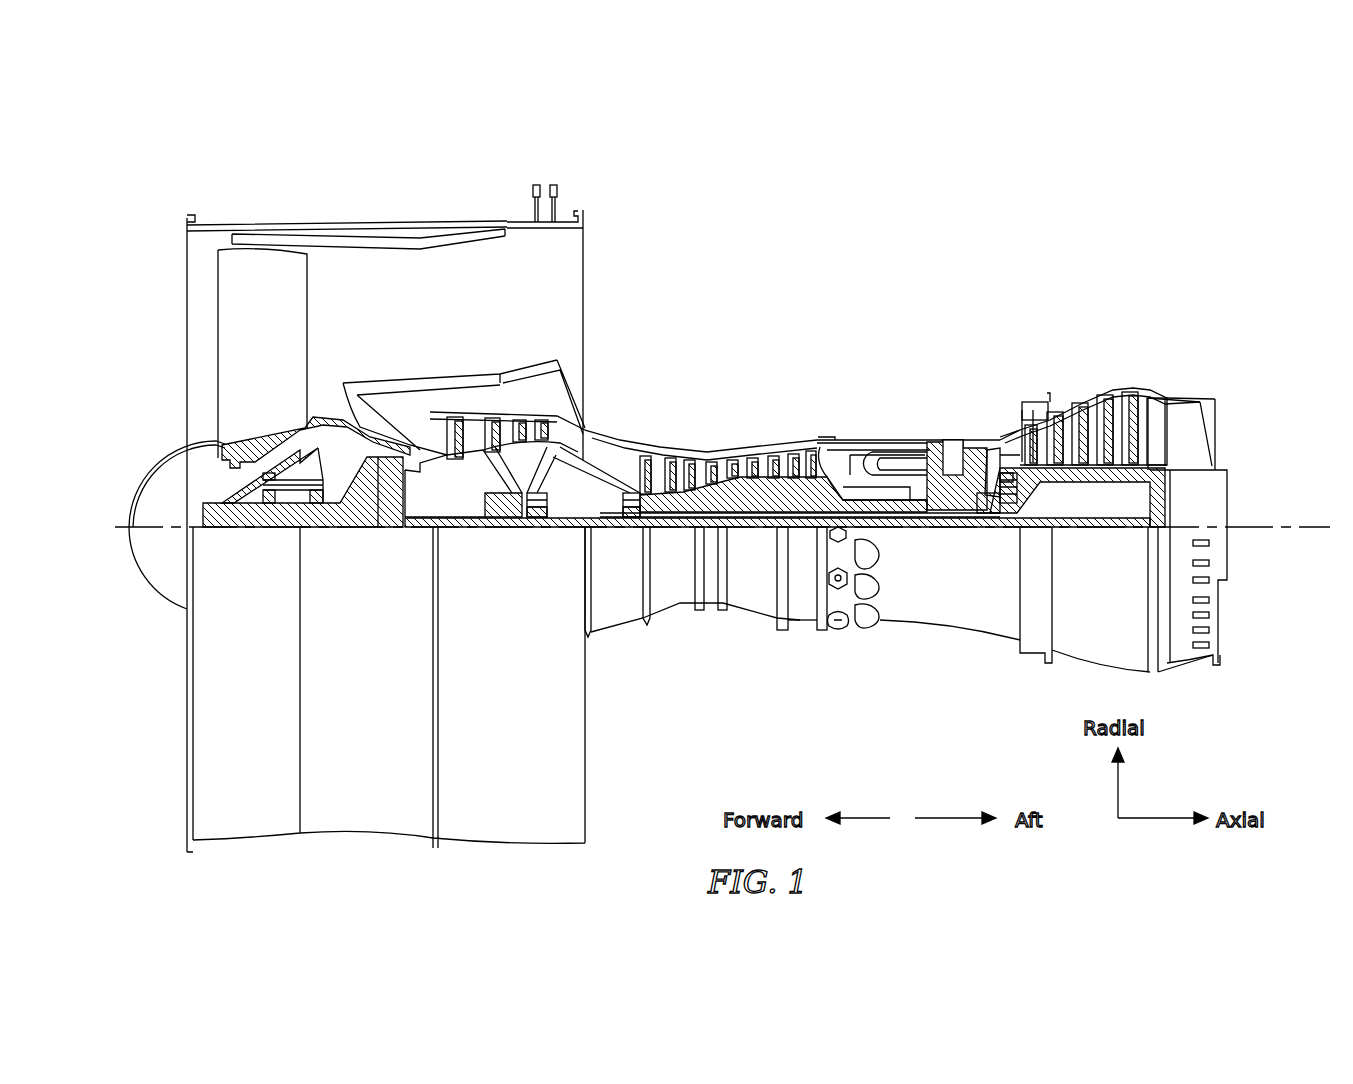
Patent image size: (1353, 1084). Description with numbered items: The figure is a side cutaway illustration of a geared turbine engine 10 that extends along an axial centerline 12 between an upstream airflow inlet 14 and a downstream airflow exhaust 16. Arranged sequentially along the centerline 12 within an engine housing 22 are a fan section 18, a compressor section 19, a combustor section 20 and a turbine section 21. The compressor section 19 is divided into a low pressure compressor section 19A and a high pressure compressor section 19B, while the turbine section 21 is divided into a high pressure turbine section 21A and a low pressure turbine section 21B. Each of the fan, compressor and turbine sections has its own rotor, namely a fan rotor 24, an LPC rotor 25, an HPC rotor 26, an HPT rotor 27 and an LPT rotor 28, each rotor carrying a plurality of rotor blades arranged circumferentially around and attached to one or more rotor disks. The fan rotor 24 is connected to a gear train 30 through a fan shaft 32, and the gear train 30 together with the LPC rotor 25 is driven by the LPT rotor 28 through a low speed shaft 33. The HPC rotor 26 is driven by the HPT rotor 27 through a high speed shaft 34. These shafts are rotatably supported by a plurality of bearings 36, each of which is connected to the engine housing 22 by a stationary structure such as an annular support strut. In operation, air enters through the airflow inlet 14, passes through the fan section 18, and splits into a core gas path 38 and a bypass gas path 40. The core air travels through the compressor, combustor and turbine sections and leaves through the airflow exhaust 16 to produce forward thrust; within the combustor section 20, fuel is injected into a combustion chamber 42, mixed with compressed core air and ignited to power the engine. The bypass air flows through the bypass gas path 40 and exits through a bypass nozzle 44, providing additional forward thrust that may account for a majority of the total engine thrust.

The geared turbine engine 10 is at (152, 204).
The axial centerline 12 is at (1275, 538).
The airflow inlet 14 is at (187, 292).
The airflow exhaust 16 is at (1218, 432).
The fan section 18 is at (350, 199).
The compressor section 19 is at (800, 140).
The low pressure compressor section 19A is at (585, 183).
The high pressure compressor section 19B is at (800, 370).
The combustor section 20 is at (922, 370).
The turbine section 21 is at (1180, 305).
The high pressure turbine section 21A is at (1012, 370).
The low pressure turbine section 21B is at (1180, 370).
The engine housing 22 is at (604, 637).
The fan rotor 24 is at (222, 450).
The LPC rotor 25 is at (497, 493).
The HPC rotor 26 is at (757, 500).
The HPT rotor 27 is at (950, 510).
The LPT rotor 28 is at (1095, 482).
The gear train 30 is at (395, 532).
The fan shaft 32 is at (252, 532).
The low speed shaft 33 is at (800, 535).
The high speed shaft 34 is at (887, 520).
The bearings 36 is at (312, 503).
The core gas path 38 is at (612, 458).
The bypass gas path 40 is at (441, 311).
The combustion chamber 42 is at (882, 462).
The bypass nozzle 44 is at (583, 279).